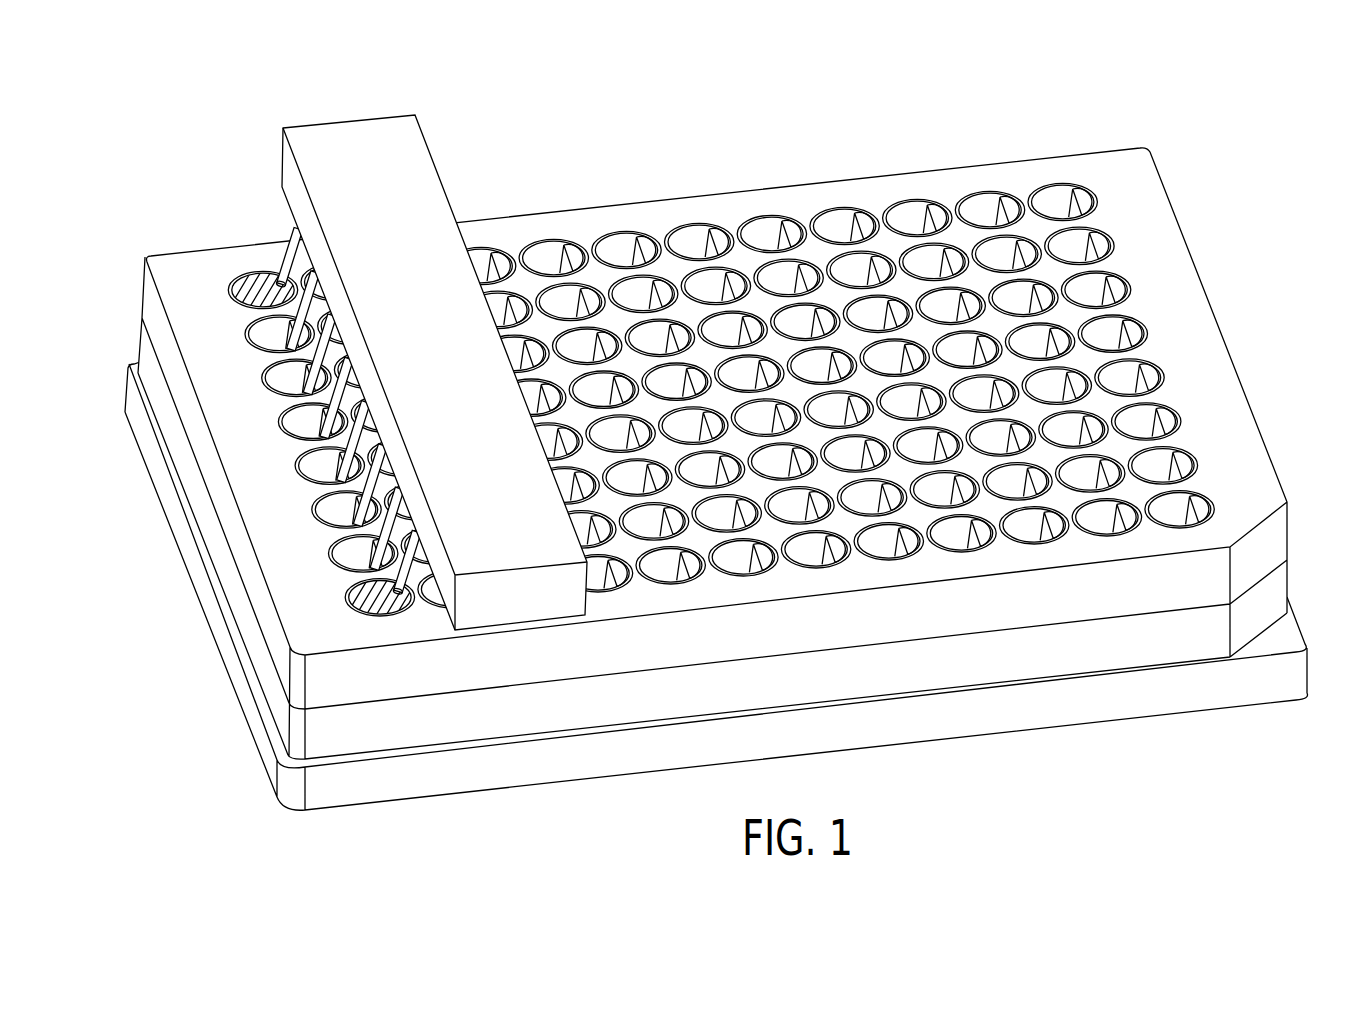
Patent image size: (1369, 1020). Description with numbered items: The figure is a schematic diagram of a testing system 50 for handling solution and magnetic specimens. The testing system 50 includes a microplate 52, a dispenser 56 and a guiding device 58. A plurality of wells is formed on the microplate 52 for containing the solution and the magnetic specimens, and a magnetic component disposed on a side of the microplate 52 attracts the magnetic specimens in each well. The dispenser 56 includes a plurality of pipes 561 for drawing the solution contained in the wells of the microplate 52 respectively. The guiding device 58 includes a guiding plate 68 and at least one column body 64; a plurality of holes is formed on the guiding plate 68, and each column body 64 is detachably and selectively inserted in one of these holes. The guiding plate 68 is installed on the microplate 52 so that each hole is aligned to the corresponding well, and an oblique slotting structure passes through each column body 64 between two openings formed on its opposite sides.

The testing system 50 is at (1075, 105).
The microplate 52 is at (1297, 624).
The dispenser 56 is at (406, 366).
The pipe 561 is at (294, 236).
The guiding device 58 is at (700, 451).
The column body 64 is at (250, 286).
The guiding plate 68 is at (188, 272).